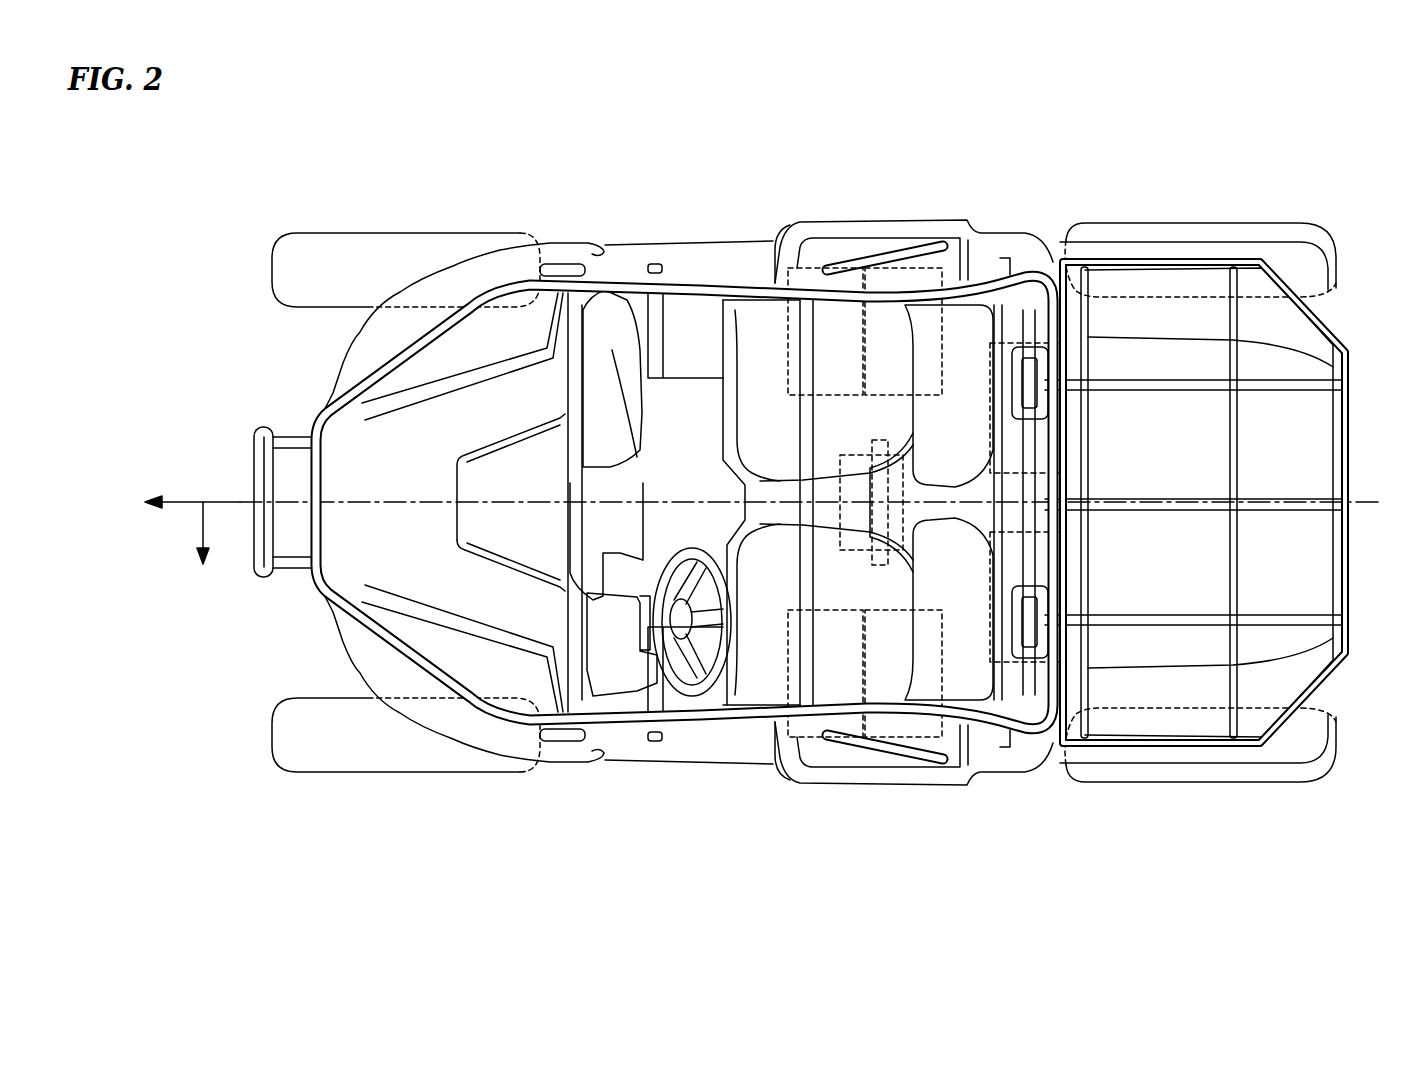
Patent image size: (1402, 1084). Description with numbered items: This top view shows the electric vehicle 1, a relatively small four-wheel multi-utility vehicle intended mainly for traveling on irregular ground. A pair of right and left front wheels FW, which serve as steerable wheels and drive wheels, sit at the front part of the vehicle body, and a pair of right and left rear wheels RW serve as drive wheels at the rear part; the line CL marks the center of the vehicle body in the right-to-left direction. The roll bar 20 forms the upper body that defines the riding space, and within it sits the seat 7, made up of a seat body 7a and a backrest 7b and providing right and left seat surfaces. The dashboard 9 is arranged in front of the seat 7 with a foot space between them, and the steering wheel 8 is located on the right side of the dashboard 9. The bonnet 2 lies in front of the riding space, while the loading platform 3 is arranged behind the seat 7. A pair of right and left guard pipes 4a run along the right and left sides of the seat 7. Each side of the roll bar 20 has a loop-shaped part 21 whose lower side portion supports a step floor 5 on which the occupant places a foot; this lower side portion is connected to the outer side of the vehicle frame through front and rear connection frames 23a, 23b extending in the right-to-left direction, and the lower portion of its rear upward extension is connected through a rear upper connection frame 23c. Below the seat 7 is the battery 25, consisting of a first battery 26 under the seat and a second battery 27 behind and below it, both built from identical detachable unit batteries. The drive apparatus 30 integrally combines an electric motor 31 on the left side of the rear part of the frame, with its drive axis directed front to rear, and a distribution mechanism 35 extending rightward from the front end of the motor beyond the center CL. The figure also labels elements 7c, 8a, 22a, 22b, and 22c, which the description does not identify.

The electric vehicle 1 is at (207, 190).
The bonnet 2 is at (487, 340).
The loading platform 3 is at (1180, 262).
The guard pipes 4a is at (898, 252).
The step floor 5 is at (660, 475).
The seat 7 is at (855, 421).
The seat body 7a is at (760, 347).
The backrest 7b is at (950, 328).
The seat back bracket 7c is at (1020, 352).
The steering wheel 8 is at (688, 698).
The steering column 8a is at (623, 690).
The dashboard 9 is at (598, 306).
The roll bar 20 is at (684, 520).
The loop-shaped part 21 is at (689, 262).
The cross member 22a is at (805, 433).
The cross member 22b is at (1003, 440).
The cross member 22c is at (1037, 440).
The front connection frame 23a is at (655, 242).
The rear connection frame 23b is at (800, 262).
The rear upper connection frame 23c is at (968, 273).
The battery 25 is at (1006, 498).
The first battery 26 is at (876, 277).
The second battery 27 is at (1052, 550).
The drive apparatus 30 is at (992, 893).
The electric motor 31 is at (930, 580).
The distribution mechanism 35 is at (880, 556).
The front wheels FW is at (322, 247).
The rear wheels RW is at (1300, 228).
The center line CL is at (232, 502).